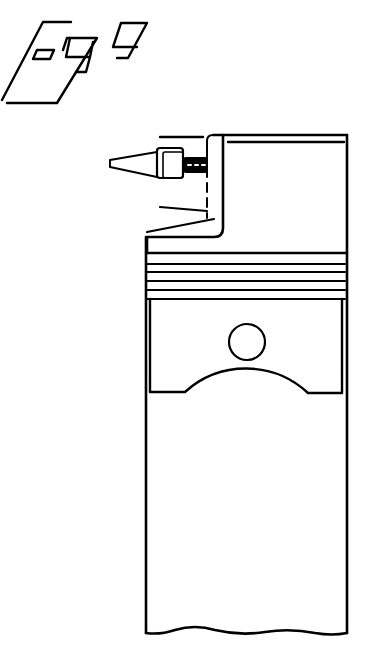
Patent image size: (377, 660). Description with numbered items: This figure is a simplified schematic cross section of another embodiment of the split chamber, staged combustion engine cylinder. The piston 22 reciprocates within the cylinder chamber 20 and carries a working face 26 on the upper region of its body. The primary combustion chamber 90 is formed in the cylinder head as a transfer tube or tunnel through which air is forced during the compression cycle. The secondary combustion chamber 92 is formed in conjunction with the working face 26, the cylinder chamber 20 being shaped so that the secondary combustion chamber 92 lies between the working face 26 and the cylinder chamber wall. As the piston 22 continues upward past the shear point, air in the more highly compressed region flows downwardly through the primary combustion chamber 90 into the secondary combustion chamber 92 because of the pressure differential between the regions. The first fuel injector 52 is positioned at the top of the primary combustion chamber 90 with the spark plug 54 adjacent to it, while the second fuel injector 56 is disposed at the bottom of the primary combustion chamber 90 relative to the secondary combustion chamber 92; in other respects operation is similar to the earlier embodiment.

The cylinder chamber 20 is at (258, 508).
The piston 22 is at (330, 357).
The working face 26 is at (193, 244).
The first fuel injector 52 is at (189, 137).
The spark plug 54 is at (141, 158).
The second fuel injector 56 is at (167, 213).
The primary combustion chamber 90 is at (224, 175).
The secondary combustion chamber 92 is at (226, 229).